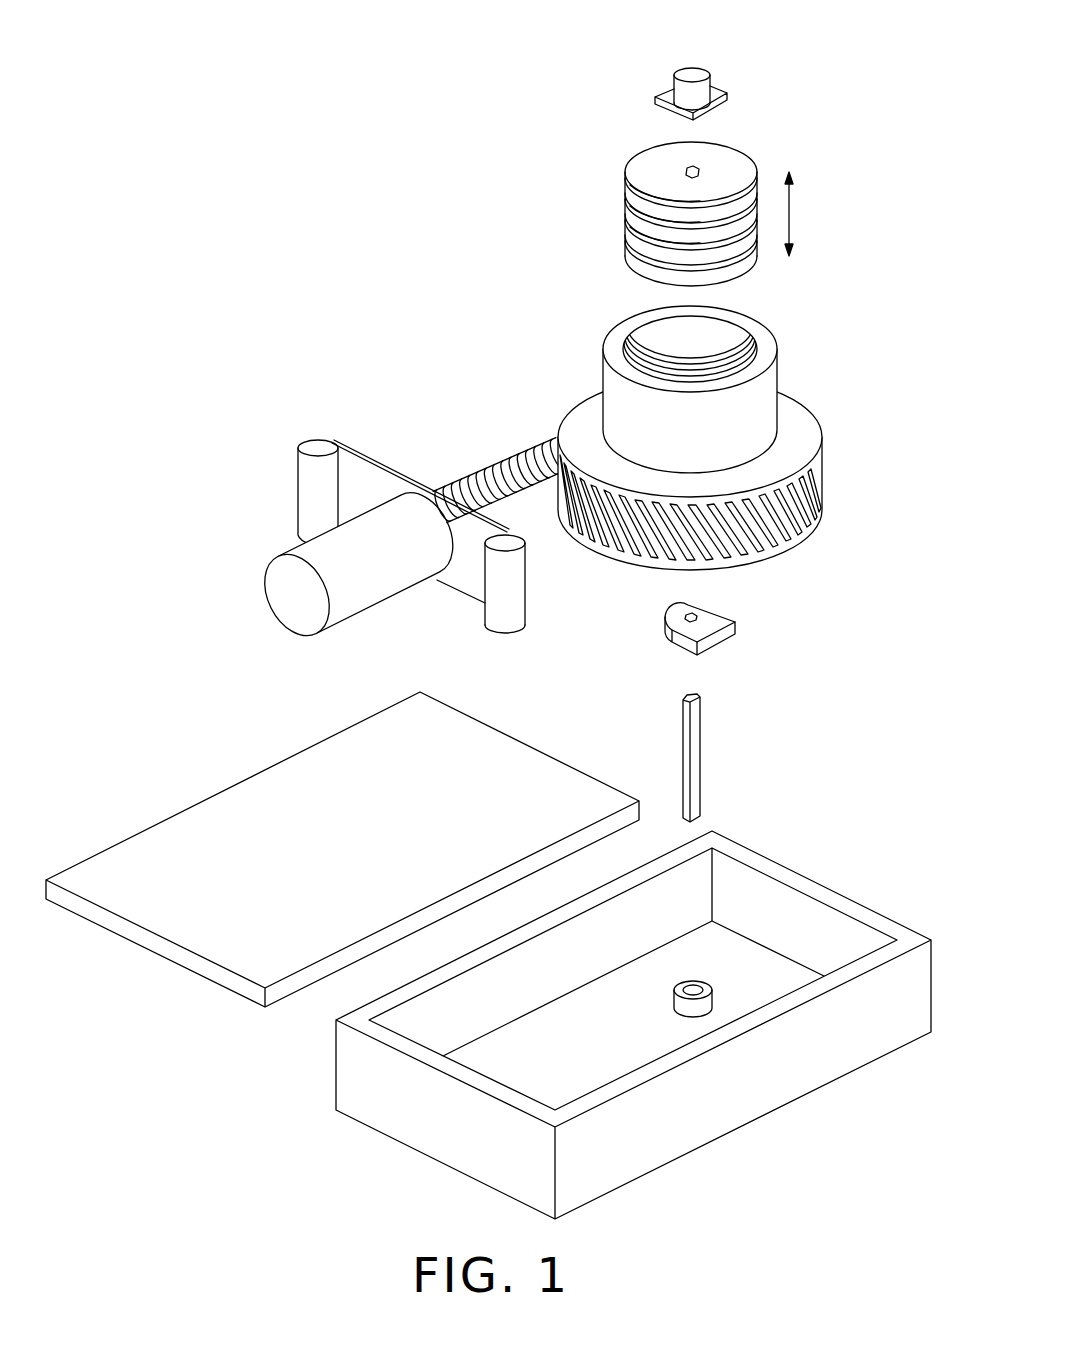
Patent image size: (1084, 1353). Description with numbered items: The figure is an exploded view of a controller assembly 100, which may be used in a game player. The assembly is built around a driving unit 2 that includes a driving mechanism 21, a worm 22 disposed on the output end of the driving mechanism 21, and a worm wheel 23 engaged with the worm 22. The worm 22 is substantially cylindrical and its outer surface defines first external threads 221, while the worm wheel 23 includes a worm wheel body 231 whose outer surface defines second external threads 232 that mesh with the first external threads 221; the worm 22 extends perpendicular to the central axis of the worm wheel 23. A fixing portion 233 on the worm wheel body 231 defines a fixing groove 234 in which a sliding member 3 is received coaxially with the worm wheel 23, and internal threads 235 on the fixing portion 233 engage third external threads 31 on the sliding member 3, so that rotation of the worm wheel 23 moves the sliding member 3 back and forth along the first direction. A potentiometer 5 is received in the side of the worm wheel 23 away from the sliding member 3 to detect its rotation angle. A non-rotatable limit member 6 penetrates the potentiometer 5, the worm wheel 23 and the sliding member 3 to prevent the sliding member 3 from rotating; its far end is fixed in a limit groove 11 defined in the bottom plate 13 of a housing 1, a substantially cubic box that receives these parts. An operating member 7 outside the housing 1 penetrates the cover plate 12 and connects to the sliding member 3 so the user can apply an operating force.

The controller assembly 100 is at (502, 36).
The housing 1 is at (442, 1137).
The limit groove 11 is at (693, 993).
The cover plate 12 is at (228, 978).
The bottom plate 13 is at (648, 1055).
The driving unit 2 is at (484, 415).
The driving mechanism 21 is at (310, 547).
The worm 22 is at (447, 494).
The first external threads 221 is at (503, 460).
The worm wheel 23 is at (903, 290).
The worm wheel body 231 is at (808, 450).
The second external threads 232 is at (818, 484).
The fixing portion 233 is at (770, 420).
The fixing groove 234 is at (715, 362).
The internal threads 235 is at (700, 340).
The sliding member 3 is at (738, 156).
The third external threads 31 is at (640, 218).
The potentiometer 5 is at (720, 632).
The limit member 6 is at (690, 750).
The operating member 7 is at (678, 88).